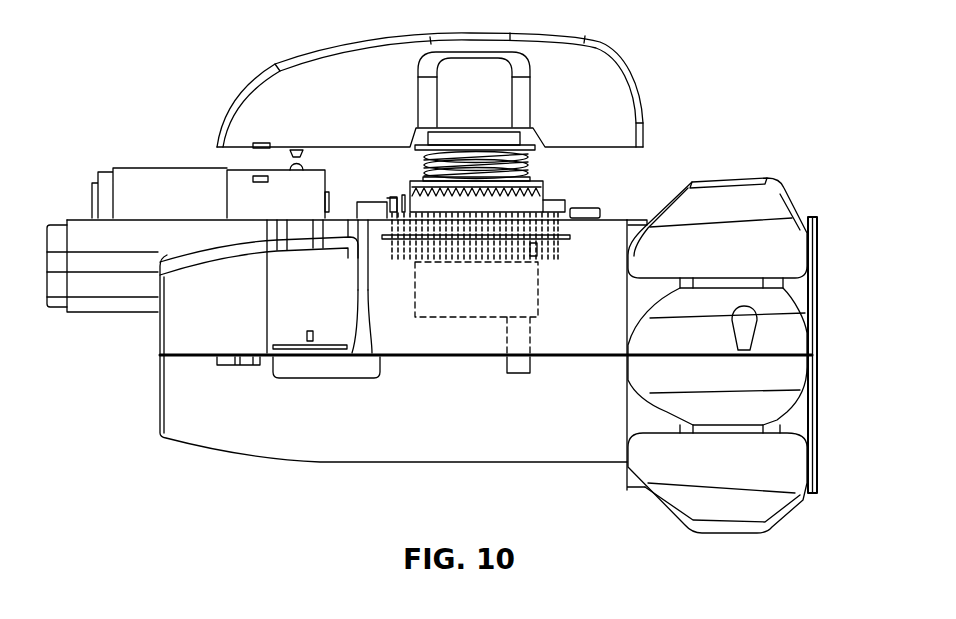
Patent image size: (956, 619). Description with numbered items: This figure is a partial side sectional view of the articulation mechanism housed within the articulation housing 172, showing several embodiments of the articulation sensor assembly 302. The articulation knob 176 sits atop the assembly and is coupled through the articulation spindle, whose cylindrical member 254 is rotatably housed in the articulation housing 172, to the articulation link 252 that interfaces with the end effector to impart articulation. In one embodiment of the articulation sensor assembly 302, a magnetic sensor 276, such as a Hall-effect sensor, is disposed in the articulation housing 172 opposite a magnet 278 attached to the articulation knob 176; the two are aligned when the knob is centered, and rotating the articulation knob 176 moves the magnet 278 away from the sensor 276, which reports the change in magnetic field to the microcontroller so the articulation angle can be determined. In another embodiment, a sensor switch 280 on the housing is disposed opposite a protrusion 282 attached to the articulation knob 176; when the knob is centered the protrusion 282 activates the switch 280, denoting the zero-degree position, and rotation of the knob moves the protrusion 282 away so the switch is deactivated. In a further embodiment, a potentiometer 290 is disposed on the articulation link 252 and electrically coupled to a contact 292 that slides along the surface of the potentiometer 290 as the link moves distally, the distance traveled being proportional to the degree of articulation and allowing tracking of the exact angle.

The articulation knob 176 is at (565, 37).
The articulation housing 172 is at (745, 177).
The articulation sensor assembly 302 is at (320, 130).
The cylindrical member 254 is at (533, 202).
The sensor switch 280 is at (303, 182).
The protrusion 282 is at (297, 147).
The magnet 278 is at (251, 146).
The magnetic sensor 276 is at (251, 178).
The articulation link 252 is at (331, 392).
The potentiometer 290 is at (567, 240).
The contact 292 is at (532, 257).